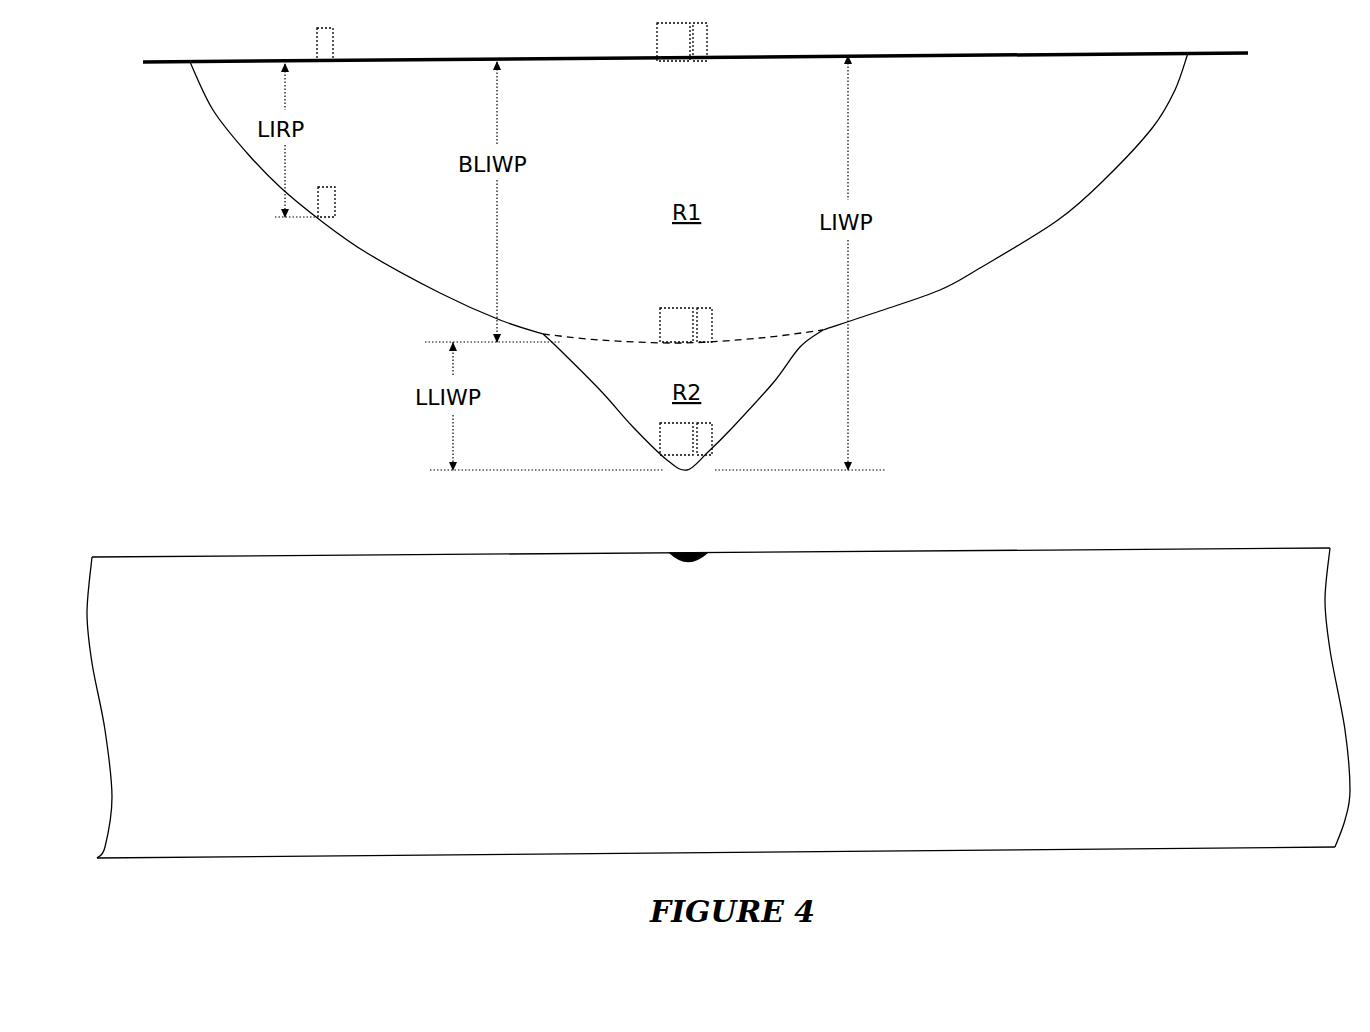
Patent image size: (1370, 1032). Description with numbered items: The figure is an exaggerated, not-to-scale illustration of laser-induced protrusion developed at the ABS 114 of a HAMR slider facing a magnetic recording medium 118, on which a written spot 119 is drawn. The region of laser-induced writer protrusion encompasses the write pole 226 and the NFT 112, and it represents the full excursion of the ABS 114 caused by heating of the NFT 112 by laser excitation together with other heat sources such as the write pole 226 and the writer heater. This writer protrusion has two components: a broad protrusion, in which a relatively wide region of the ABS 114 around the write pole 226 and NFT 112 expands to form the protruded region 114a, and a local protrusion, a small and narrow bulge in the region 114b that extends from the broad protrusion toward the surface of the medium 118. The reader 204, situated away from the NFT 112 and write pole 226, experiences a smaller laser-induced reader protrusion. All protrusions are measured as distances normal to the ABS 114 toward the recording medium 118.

The NFT 112 is at (708, 38).
The ABS 114 is at (1222, 54).
The protruded region R1 114a is at (1058, 220).
The region R2 114b is at (772, 383).
The magnetic recording medium 118 is at (1192, 548).
The written bit / recorded region on medium 119 is at (683, 562).
The reader 204 is at (335, 33).
The write pole 226 is at (657, 38).